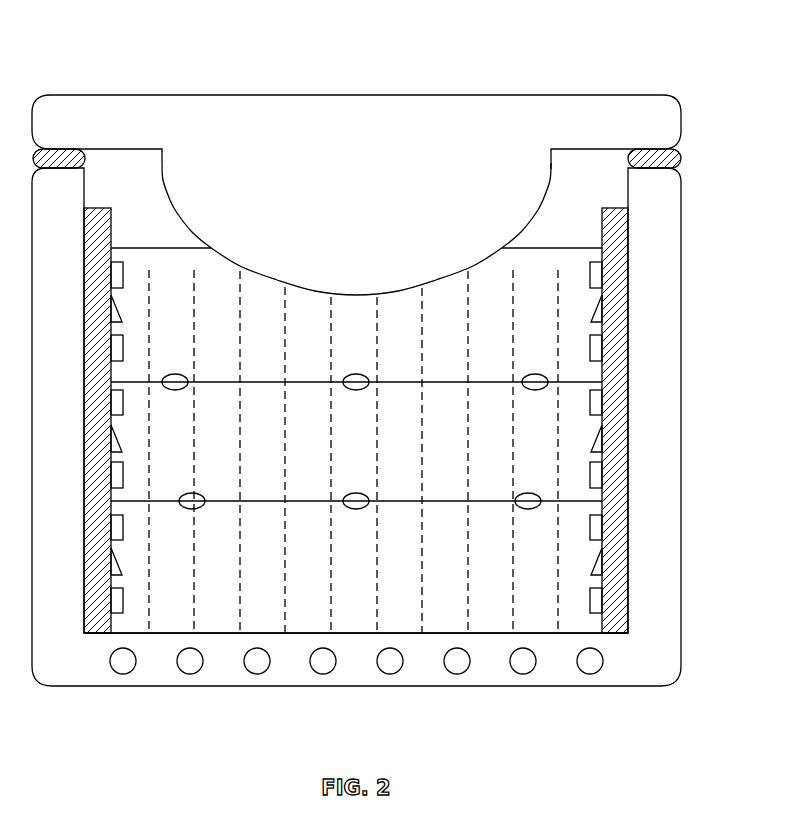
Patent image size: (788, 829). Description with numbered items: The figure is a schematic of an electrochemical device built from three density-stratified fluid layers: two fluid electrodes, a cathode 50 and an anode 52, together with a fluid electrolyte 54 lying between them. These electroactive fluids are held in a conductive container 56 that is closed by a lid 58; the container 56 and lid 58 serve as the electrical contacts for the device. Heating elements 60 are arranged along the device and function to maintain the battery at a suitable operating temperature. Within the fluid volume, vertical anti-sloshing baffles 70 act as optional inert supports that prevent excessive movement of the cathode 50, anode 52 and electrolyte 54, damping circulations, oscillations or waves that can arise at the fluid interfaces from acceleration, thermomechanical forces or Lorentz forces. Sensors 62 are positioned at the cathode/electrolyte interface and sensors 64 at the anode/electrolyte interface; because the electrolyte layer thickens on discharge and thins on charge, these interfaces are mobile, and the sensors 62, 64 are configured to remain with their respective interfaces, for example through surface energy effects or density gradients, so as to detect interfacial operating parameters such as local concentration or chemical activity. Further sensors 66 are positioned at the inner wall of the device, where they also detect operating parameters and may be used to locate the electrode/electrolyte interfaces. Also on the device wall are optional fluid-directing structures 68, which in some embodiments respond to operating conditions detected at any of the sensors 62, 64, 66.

The cathode 50 is at (563, 568).
The anode 52 is at (538, 323).
The fluid electrolyte 54 is at (563, 463).
The conductive container 56 is at (356, 672).
The lid 58 is at (374, 95).
The heating elements 60 is at (121, 663).
The sensors at cathode/electrolyte interface 62 is at (353, 505).
The sensors at anode/electrolyte interface 64 is at (178, 384).
The sensors at inner wall 66 is at (117, 272).
The fluid-directing structures 68 is at (117, 308).
The anti-sloshing baffles 70 is at (240, 328).